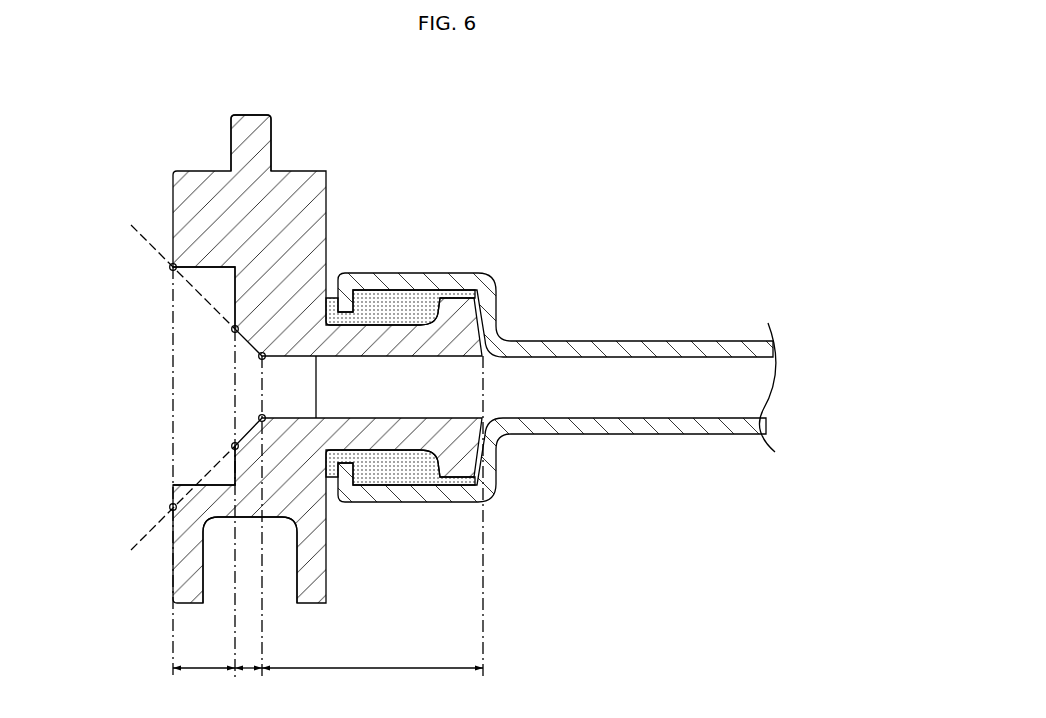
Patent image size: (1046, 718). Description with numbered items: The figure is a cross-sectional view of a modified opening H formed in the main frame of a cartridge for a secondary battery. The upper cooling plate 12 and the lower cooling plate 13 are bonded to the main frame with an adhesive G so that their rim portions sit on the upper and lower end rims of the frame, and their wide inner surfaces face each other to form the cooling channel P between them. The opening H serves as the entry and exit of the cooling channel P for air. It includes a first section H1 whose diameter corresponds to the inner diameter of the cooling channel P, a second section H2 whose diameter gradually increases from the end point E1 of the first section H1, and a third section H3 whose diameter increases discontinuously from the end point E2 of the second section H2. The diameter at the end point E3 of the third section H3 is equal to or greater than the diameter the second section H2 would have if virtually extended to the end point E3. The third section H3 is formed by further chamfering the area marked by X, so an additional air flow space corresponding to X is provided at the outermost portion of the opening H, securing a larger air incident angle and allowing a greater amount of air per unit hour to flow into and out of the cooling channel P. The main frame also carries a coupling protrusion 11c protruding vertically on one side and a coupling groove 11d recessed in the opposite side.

The coupling protrusion 11c is at (250, 128).
The coupling groove 11d is at (220, 578).
The upper cooling plate 12 is at (701, 343).
The lower cooling plate 13 is at (701, 433).
The adhesive G is at (399, 302).
The cooling channel P is at (658, 389).
The end point of the first section E1 is at (275, 387).
The end point of the second section E2 is at (220, 387).
The end point of the third section E3 is at (154, 387).
The chamfered area X is at (204, 376).
The opening H is at (160, 318).
The first section H1 is at (372, 527).
The second section H2 is at (249, 514).
The third section H3 is at (204, 483).